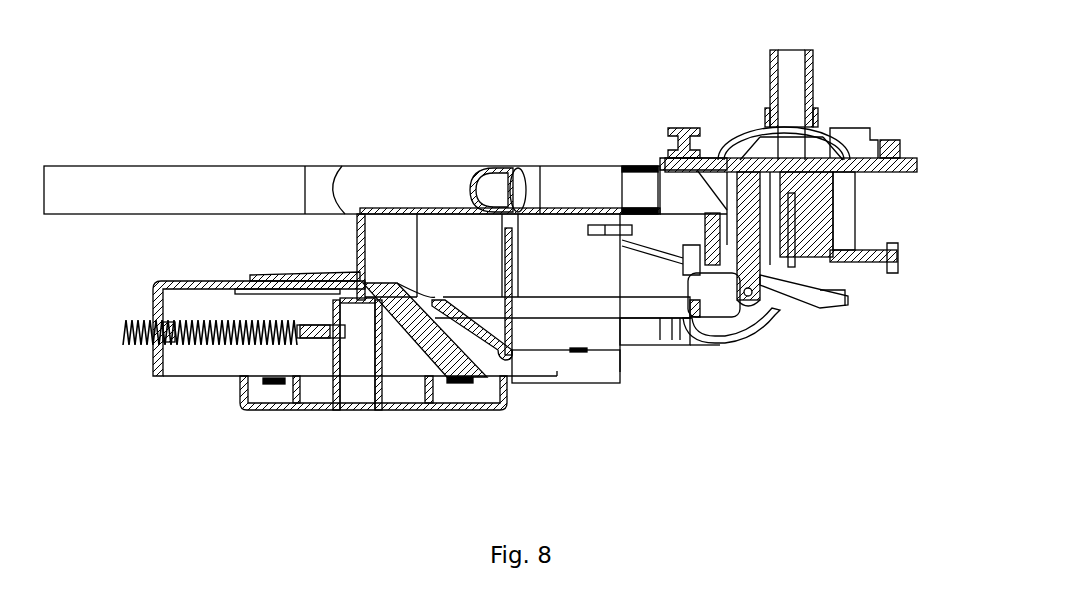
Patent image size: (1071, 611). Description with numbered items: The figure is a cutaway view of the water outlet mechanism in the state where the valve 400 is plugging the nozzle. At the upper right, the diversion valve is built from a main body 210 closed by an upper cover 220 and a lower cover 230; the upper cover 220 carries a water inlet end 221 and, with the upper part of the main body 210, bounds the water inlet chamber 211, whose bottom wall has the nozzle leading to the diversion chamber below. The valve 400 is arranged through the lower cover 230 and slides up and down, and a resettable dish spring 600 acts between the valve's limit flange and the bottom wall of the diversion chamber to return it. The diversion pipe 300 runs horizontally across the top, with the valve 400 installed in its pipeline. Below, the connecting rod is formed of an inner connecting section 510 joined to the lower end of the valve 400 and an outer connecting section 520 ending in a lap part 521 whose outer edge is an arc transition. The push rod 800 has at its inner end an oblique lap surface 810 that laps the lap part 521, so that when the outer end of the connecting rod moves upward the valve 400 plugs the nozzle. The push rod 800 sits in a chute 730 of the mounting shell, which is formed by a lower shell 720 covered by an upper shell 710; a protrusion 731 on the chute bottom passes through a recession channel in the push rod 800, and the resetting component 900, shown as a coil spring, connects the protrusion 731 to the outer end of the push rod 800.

The diversion pipe 300 is at (292, 165).
The lap surface 810 is at (418, 297).
The push rod 800 is at (185, 281).
The upper shell 710 is at (258, 281).
The protrusion 731 is at (352, 300).
The resetting component 900 is at (130, 322).
The lower shell 720 is at (457, 410).
The chute 730 is at (513, 405).
The lap part 521 is at (517, 345).
The outer connecting section 520 is at (633, 312).
The inner connecting section 510 is at (718, 322).
The valve 400 is at (768, 305).
The resettable dish spring 600 is at (672, 150).
The water inlet chamber 211 is at (758, 147).
The water inlet end 221 is at (878, 42).
The upper cover 220 is at (827, 128).
The main body 210 is at (937, 143).
The lower cover 230 is at (893, 268).